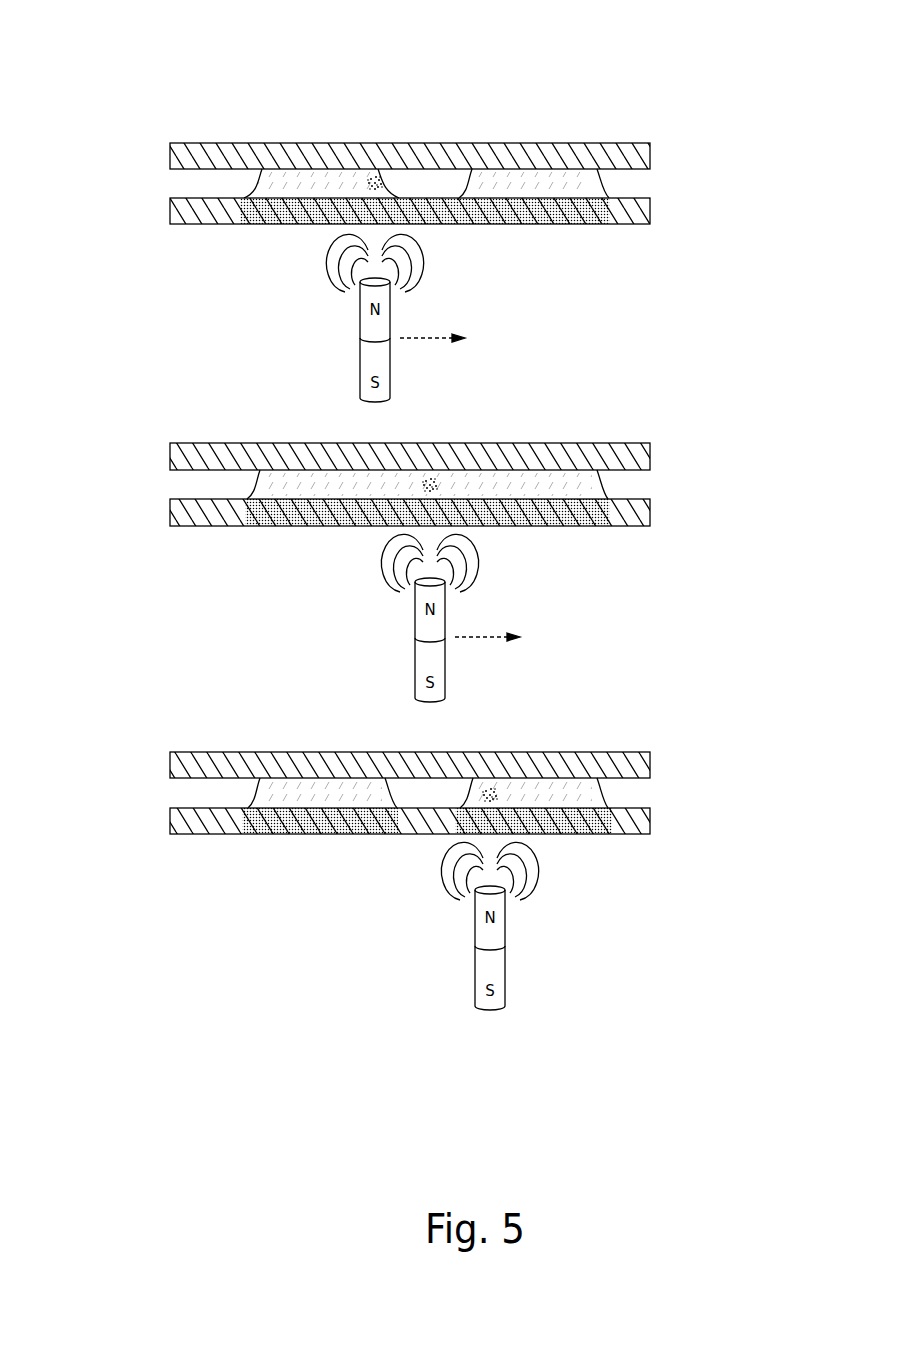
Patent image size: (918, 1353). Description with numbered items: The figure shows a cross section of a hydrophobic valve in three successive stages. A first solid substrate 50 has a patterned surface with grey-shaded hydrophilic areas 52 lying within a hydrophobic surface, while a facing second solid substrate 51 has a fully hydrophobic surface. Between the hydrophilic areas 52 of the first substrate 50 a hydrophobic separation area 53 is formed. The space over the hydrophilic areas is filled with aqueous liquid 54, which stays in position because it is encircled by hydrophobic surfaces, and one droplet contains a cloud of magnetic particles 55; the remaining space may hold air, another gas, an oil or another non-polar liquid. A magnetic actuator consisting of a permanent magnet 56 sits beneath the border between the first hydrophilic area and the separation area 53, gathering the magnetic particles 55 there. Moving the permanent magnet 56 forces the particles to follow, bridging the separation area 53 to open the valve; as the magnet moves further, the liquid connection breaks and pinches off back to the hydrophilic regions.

The first solid substrate 50 is at (429, 184).
The second solid substrate 51 is at (171, 143).
The hydrophilic areas 52 is at (445, 274).
The separation area 53 is at (458, 224).
The aqueous liquid 54 is at (318, 168).
The magnetic particles 55 is at (380, 168).
The permanent magnet 56 is at (358, 308).